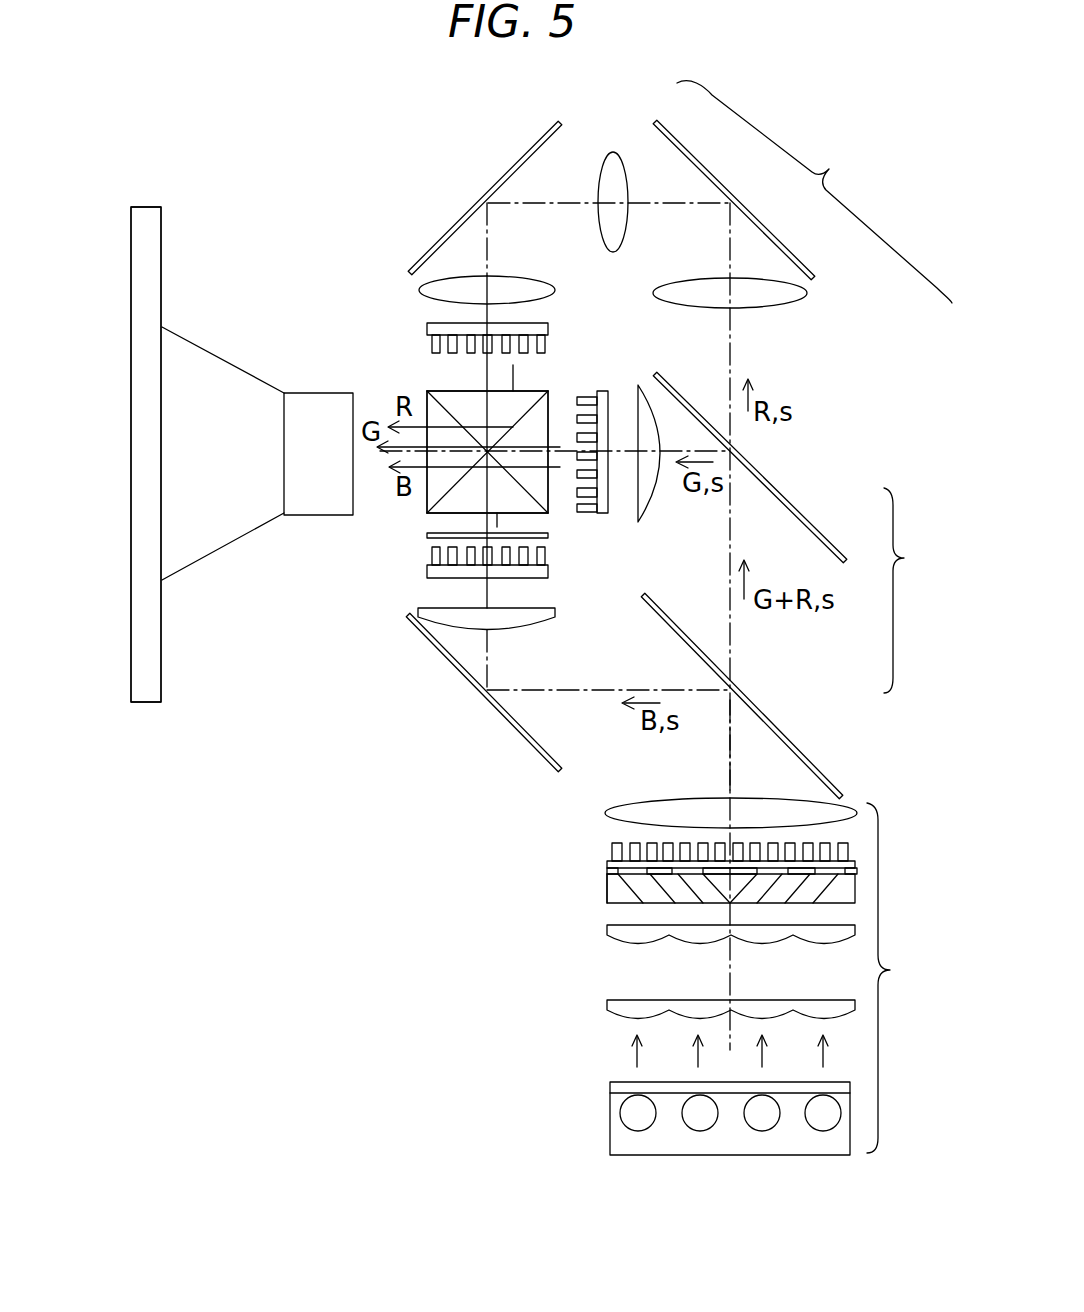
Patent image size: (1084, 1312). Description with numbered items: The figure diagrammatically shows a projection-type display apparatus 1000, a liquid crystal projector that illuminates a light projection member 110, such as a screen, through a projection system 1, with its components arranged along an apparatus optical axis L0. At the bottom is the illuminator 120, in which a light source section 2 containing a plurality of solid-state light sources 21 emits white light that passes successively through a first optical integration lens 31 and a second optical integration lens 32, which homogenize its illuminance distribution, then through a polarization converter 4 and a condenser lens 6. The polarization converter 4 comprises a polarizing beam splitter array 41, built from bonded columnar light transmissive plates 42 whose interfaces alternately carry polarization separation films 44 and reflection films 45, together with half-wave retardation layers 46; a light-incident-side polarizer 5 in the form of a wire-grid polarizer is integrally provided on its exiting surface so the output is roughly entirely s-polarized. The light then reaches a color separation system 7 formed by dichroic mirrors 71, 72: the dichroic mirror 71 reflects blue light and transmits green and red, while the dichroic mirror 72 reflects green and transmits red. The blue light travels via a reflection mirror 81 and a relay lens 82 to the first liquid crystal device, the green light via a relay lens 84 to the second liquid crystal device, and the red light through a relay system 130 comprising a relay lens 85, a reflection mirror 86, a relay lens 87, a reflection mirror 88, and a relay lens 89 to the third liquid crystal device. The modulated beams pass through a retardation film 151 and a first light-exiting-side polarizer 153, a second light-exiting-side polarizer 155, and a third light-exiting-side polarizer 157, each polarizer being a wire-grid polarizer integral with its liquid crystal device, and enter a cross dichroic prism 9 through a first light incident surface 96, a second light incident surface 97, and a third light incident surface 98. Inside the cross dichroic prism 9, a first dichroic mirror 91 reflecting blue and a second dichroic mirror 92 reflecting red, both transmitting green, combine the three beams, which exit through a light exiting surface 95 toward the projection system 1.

The projection-type display apparatus 1000 is at (243, 157).
The light projection member 110 is at (134, 650).
The projection system 1 is at (298, 393).
The third light-exiting-side polarizer 157 is at (432, 345).
The second light-exiting-side polarizer 155 is at (580, 512).
The first light-exiting-side polarizer 153 is at (432, 557).
The retardation film 151 is at (427, 536).
The light-incident-side polarizer 5 is at (665, 843).
The cross dichroic prism 9 is at (532, 390).
The first dichroic mirror 91 is at (520, 488).
The second dichroic mirror 92 is at (532, 410).
The light exiting surface 95 is at (427, 497).
The first light incident surface 96 is at (450, 513).
The second light incident surface 97 is at (548, 487).
The third light incident surface 98 is at (465, 391).
The relay lens 89 is at (520, 282).
The reflection mirror 88 is at (532, 147).
The relay lens 87 is at (612, 152).
The reflection mirror 86 is at (785, 243).
The relay lens 85 is at (788, 305).
The relay lens 84 is at (648, 498).
The relay lens 82 is at (463, 628).
The reflection mirror 81 is at (505, 720).
The relay system 130 is at (814, 192).
The color separation system 7 is at (785, 585).
The dichroic mirror 71 is at (794, 737).
The dichroic mirror 72 is at (795, 505).
The apparatus optical axis L0 is at (730, 745).
The illuminator 120 is at (695, 983).
The condenser lens 6 is at (605, 813).
The λ/2 retardation layers 46 is at (678, 868).
The polarization converter 4 is at (607, 883).
The polarizing beam splitter array 41 is at (607, 898).
The light transmissive plates 42 is at (713, 897).
The polarization separation films 44 is at (630, 890).
The reflection films 45 is at (667, 890).
The second optical integration lens 32 is at (607, 930).
The first optical integration lens 31 is at (607, 1005).
The light source section 2 is at (610, 1115).
The solid-state light sources 21 is at (748, 1130).